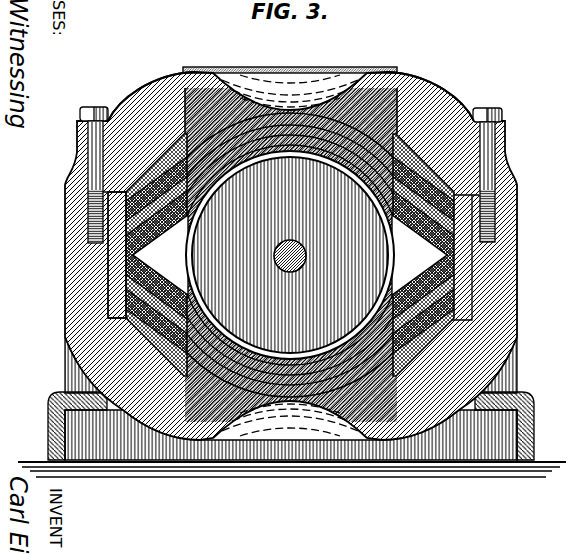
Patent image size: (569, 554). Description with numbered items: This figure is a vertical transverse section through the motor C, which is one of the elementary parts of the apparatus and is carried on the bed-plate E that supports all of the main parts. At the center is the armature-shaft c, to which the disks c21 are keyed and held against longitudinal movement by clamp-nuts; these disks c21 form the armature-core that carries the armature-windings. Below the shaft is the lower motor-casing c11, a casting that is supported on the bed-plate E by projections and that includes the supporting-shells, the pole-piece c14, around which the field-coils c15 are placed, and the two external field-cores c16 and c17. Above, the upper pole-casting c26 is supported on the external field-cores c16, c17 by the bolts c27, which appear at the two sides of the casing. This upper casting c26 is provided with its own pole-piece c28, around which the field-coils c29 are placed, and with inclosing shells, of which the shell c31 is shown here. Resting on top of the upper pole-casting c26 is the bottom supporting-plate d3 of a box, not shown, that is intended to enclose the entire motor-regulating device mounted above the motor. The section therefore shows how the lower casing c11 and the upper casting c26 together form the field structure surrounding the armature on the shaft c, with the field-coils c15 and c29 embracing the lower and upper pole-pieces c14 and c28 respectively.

The motor C is at (274, 256).
The bed-plate E is at (290, 432).
The bottom supporting-plate d3 is at (290, 59).
The bolts c27 is at (105, 99).
The field-coils c29 is at (153, 138).
The inclosing shell c31 is at (180, 88).
The upper pole-casting c26 is at (229, 92).
The pole-piece c28 is at (290, 255).
The disks c21 is at (196, 254).
The armature-shaft c is at (273, 256).
The field-coils c15 is at (112, 310).
The external field-core c16 is at (475, 296).
The external field-core c17 is at (65, 328).
The lower motor-casing c11 is at (287, 440).
The pole-piece c14 is at (290, 255).